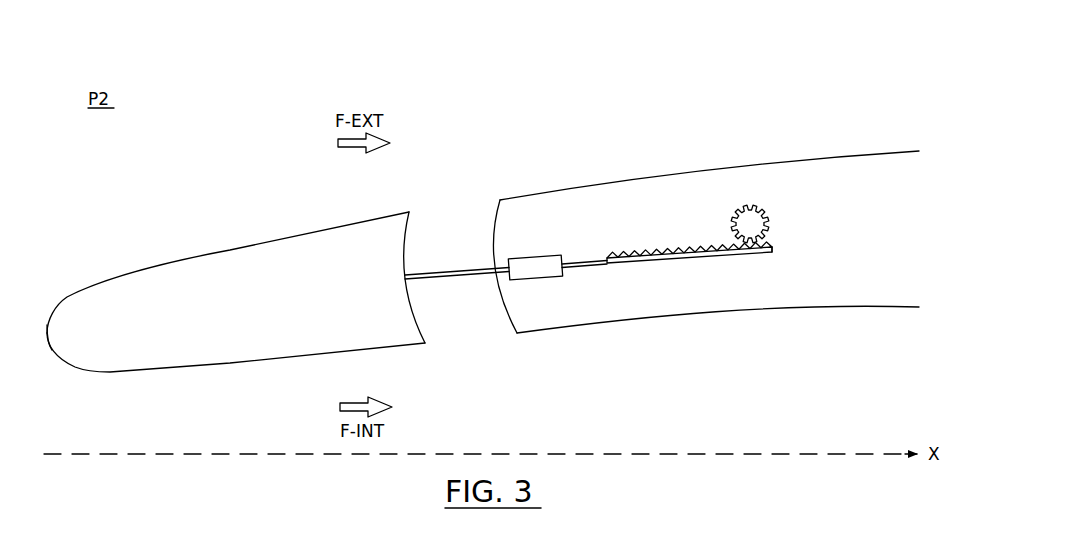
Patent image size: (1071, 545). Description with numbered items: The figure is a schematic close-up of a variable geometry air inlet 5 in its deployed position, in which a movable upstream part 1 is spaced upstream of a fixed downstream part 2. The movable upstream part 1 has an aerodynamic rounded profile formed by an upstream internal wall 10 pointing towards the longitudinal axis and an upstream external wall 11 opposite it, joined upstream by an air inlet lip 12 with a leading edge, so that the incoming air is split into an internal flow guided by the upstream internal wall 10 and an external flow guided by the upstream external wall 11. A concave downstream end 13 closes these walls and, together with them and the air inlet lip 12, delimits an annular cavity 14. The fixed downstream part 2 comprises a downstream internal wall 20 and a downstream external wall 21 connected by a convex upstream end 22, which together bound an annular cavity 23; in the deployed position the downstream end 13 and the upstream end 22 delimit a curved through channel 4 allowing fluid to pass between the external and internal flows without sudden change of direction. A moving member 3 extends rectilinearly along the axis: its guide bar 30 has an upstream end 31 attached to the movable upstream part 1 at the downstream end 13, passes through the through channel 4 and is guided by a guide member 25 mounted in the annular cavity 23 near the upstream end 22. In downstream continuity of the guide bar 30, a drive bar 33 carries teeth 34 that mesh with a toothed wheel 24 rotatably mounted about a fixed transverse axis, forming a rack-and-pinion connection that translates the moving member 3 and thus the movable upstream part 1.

The movable upstream part 1 is at (168, 256).
The upstream internal wall 10 is at (222, 368).
The upstream external wall 11 is at (221, 250).
The air inlet lip 12 is at (46, 336).
The downstream end 13 is at (408, 228).
The annular cavity 14 is at (265, 314).
The fixed downstream part 2 is at (842, 150).
The downstream internal wall 20 is at (808, 307).
The downstream external wall 21 is at (806, 157).
The upstream end 22 is at (497, 208).
The annular cavity 23 is at (882, 237).
The toothed wheel 24 is at (750, 206).
The guide member 25 is at (535, 256).
The moving member 3 is at (637, 270).
The guide bar 30 is at (594, 266).
The upstream end 31 is at (407, 281).
The drive bar 33 is at (729, 253).
The teeth 34 is at (774, 239).
The through channel 4 is at (475, 324).
The air inlet 5 is at (602, 126).